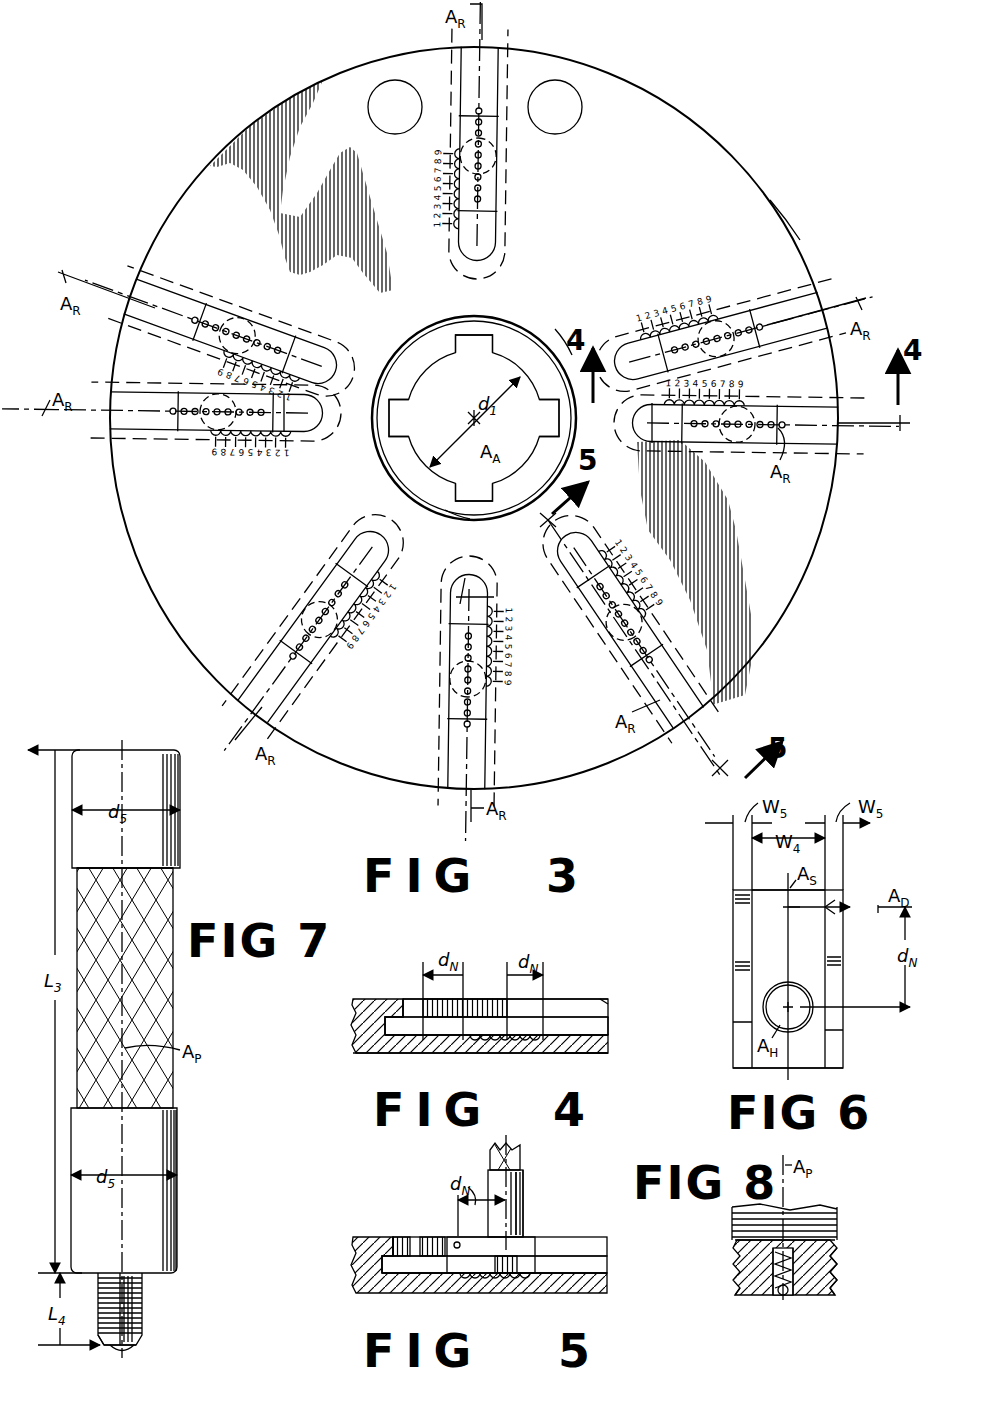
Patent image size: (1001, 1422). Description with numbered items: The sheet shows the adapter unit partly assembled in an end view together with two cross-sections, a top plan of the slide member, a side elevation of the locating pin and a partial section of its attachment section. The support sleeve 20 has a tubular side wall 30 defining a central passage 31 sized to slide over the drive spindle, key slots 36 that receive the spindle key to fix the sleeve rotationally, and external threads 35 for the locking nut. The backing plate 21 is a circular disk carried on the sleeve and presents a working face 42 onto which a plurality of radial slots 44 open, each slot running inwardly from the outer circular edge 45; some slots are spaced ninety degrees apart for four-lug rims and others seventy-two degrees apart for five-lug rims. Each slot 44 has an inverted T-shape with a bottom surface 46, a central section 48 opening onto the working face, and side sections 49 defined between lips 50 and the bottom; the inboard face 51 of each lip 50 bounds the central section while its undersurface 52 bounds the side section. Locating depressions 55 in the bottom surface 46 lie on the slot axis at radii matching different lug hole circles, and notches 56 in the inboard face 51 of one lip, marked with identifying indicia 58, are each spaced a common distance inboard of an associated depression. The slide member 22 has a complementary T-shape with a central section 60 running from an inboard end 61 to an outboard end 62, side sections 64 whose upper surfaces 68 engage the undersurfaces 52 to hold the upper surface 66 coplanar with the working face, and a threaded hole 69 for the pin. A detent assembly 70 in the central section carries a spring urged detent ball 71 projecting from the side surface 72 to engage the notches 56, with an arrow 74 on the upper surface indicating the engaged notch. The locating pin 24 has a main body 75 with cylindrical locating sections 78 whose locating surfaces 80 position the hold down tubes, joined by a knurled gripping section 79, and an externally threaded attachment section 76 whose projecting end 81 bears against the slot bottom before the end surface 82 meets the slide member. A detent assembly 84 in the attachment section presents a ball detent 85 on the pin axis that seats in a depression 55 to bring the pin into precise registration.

In FIG. 3, the support sleeve 20 is at (522, 324).
In FIG. 3, the backing plate 21 is at (733, 135).
In FIG. 4, the backing plate 21 is at (357, 1048).
In FIG. 5, the backing plate 21 is at (357, 1288).
In FIG. 3, the slide member 22 is at (495, 203).
In FIG. 5, the slide member 22 is at (530, 1246).
In FIG. 6, the slide member 22 is at (715, 884).
In FIG. 3, the locating pin 24 is at (497, 160).
In FIG. 7, the locating pin 24 is at (134, 748).
In FIG. 5, the locating pin 24 is at (488, 1172).
In FIG. 8, the locating pin 24 is at (843, 1234).
In FIG. 3, the tubular side wall 30 is at (542, 344).
In FIG. 3, the central passage 31 is at (492, 338).
In FIG. 3, the threads 35 is at (450, 512).
In FIG. 3, the key slots 36 is at (468, 338).
In FIG. 3, the working face 42 is at (668, 200).
In FIG. 3, the slots 44 is at (480, 50).
In FIG. 4, the slots 44 is at (402, 998).
In FIG. 5, the slots 44 is at (400, 1236).
In FIG. 3, the outer circular edge 45 is at (770, 205).
In FIG. 4, the outer circular edge 45 is at (609, 1048).
In FIG. 4, the bottom surface 46 is at (585, 1053).
In FIG. 4, the central section 48 is at (552, 1000).
In FIG. 5, the central section 48 is at (580, 1248).
In FIG. 4, the side sections 49 is at (609, 1031).
In FIG. 5, the side sections 49 is at (598, 1264).
In FIG. 4, the lips 50 is at (594, 1000).
In FIG. 4, the inboard face 51 is at (585, 1004).
In FIG. 4, the undersurface 52 is at (608, 1020).
In FIG. 3, the locating depressions 55 is at (260, 418).
In FIG. 4, the locating depressions 55 is at (522, 1040).
In FIG. 5, the locating depressions 55 is at (530, 1278).
In FIG. 3, the notches 56 is at (488, 600).
In FIG. 4, the notches 56 is at (462, 1001).
In FIG. 5, the notches 56 is at (440, 1236).
In FIG. 3, the identifying indicia 58 is at (218, 365).
In FIG. 6, the central section 60 is at (768, 1060).
In FIG. 6, the inboard end 61 is at (775, 889).
In FIG. 6, the outboard end 62 is at (812, 1068).
In FIG. 6, the side sections 64 is at (730, 972).
In FIG. 6, the upper surface 66 is at (774, 976).
In FIG. 6, the upper surface 68 is at (735, 938).
In FIG. 6, the threaded hole 69 is at (795, 990).
In FIG. 6, the detent assembly 70 is at (840, 913).
In FIG. 6, the detent ball 71 is at (836, 903).
In FIG. 6, the side surface 72 is at (733, 1024).
In FIG. 6, the arrow 74 is at (792, 910).
In FIG. 7, the main body 75 is at (176, 875).
In FIG. 7, the attachment section 76 is at (142, 1308).
In FIG. 8, the attachment section 76 is at (735, 1225).
In FIG. 7, the locating sections 78 is at (172, 830).
In FIG. 5, the locating sections 78 is at (523, 1188).
In FIG. 7, the knurled gripping section 79 is at (166, 1092).
In FIG. 7, the locating surface 80 is at (170, 852).
In FIG. 5, the locating surface 80 is at (518, 1210).
In FIG. 7, the projecting end 81 is at (142, 1342).
In FIG. 8, the projecting end 81 is at (838, 1284).
In FIG. 7, the end surface 82 is at (102, 1347).
In FIG. 8, the end surface 82 is at (808, 1296).
In FIG. 8, the detent assembly 84 is at (752, 1296).
In FIG. 7, the ball detent 85 is at (135, 1350).
In FIG. 8, the ball detent 85 is at (783, 1296).